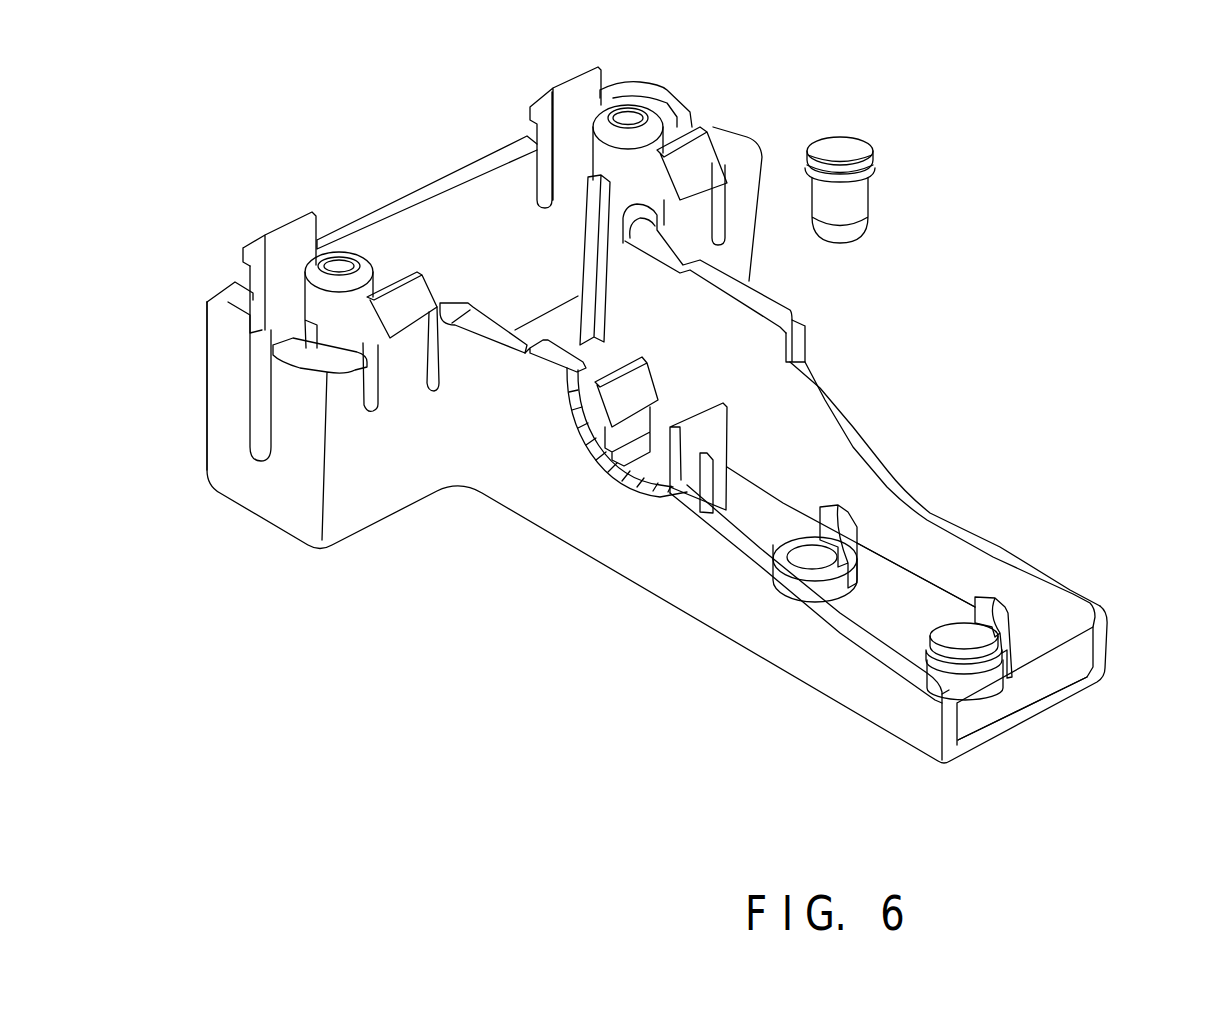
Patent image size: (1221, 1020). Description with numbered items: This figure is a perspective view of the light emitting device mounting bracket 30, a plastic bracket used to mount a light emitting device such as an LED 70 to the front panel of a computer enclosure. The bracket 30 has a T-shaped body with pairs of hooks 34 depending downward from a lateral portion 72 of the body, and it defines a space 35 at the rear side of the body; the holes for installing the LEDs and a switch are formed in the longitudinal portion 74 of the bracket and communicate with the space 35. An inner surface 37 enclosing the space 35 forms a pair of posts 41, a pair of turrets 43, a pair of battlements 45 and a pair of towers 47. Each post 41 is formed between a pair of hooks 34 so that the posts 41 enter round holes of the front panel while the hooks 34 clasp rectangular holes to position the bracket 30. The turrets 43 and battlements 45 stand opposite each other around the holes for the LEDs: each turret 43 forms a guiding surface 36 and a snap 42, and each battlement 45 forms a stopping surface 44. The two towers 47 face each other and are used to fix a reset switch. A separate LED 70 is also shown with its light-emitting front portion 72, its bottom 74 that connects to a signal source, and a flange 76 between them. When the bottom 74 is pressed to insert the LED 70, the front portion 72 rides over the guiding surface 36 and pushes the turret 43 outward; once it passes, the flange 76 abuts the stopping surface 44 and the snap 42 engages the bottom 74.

The light emitting device mounting bracket 30 is at (657, 422).
The hooks 34 is at (575, 97).
The space 35 is at (1036, 655).
The guiding surface 36 is at (843, 530).
The inner surface 37 is at (923, 620).
The posts 41 is at (655, 128).
The snap 42 is at (828, 588).
The turrets 43 is at (815, 530).
The stopping surface 44 is at (787, 537).
The battlements 45 is at (832, 583).
The towers 47 is at (683, 447).
The LED 70 is at (878, 160).
The front portion 72 is at (258, 483).
The bottom 74 is at (835, 150).
The flange 76 is at (860, 175).